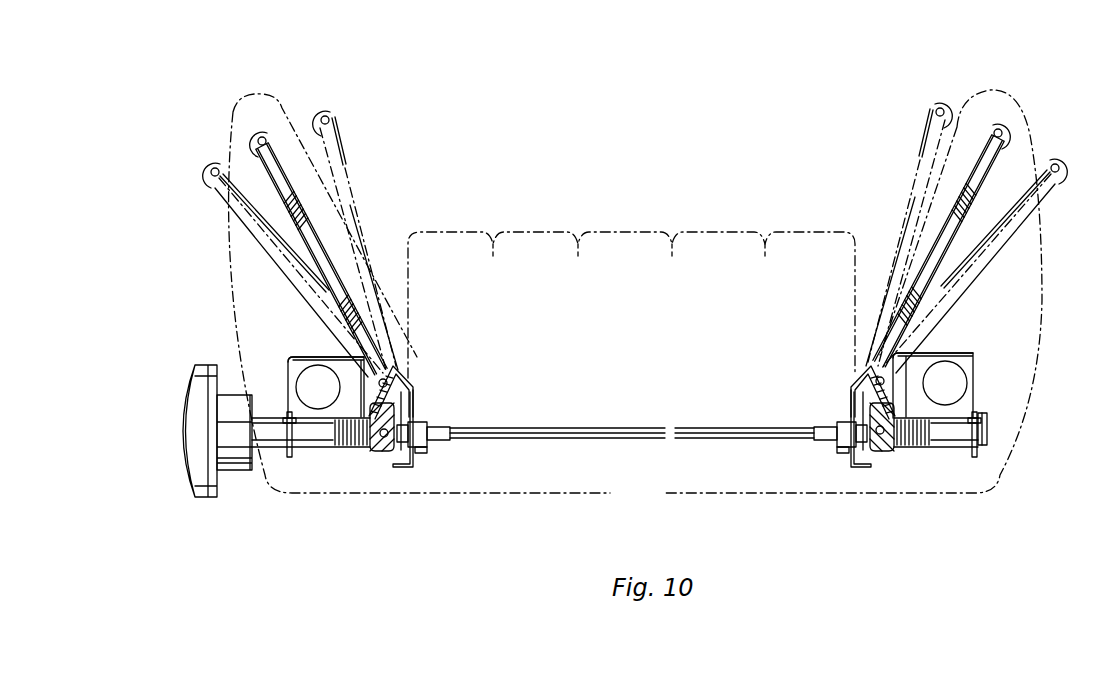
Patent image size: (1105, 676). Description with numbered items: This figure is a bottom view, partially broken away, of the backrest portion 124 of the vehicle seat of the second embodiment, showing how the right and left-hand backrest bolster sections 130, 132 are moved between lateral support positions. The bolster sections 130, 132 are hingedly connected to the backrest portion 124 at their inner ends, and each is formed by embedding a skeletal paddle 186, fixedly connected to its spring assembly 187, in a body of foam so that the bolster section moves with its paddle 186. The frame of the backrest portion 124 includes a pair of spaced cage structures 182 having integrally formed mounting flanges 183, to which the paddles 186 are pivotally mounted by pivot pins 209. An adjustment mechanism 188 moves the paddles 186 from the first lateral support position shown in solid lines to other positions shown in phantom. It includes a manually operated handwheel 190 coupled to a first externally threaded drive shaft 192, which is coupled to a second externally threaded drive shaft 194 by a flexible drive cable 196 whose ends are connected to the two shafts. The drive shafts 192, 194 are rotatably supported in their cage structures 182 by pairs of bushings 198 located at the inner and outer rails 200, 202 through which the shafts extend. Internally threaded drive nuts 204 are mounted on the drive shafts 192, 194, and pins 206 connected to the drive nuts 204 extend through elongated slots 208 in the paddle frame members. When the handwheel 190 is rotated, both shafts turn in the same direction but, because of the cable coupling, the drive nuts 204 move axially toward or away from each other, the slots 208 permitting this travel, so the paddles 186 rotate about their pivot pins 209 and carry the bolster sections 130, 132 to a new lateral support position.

The backrest portion 124 is at (658, 230).
The right-hand backrest bolster section 130 is at (1007, 84).
The left-hand backrest bolster section 132 is at (262, 92).
The cage structure 182 is at (282, 348).
The mounting flange 183 is at (413, 390).
The paddle 186 is at (305, 166).
The spring assembly 187 is at (263, 137).
The adjustment mechanism 188 is at (175, 425).
The handwheel 190 is at (235, 472).
The first externally threaded drive shaft 192 is at (327, 447).
The second externally threaded drive shaft 194 is at (910, 443).
The flexible drive cable 196 is at (585, 437).
The bushing 198 is at (320, 476).
The inner rail 200 is at (413, 410).
The outer rail 202 is at (290, 393).
The internally threaded drive nut 204 is at (393, 450).
The pin 206 is at (383, 438).
The elongated slot 208 is at (427, 446).
The pivot pin 209 is at (420, 360).